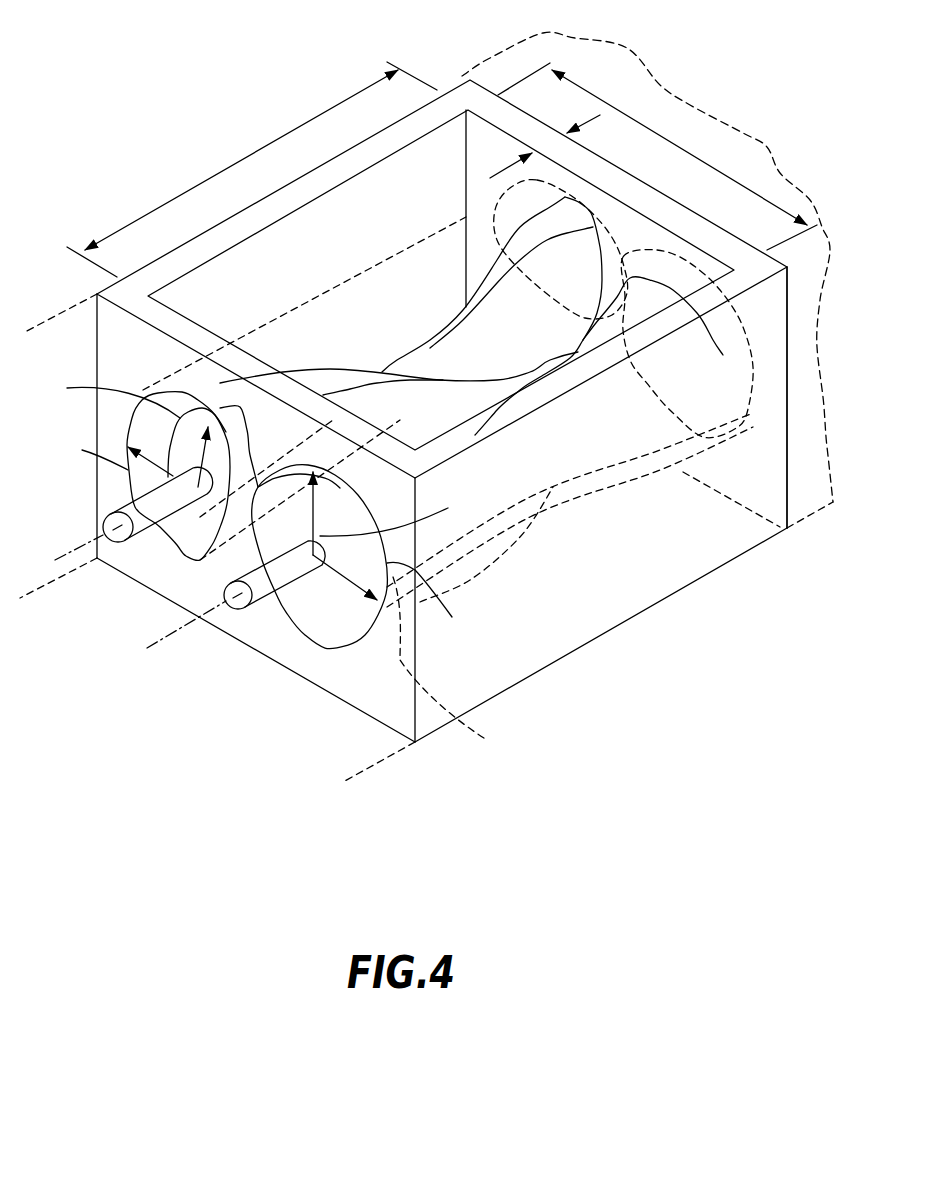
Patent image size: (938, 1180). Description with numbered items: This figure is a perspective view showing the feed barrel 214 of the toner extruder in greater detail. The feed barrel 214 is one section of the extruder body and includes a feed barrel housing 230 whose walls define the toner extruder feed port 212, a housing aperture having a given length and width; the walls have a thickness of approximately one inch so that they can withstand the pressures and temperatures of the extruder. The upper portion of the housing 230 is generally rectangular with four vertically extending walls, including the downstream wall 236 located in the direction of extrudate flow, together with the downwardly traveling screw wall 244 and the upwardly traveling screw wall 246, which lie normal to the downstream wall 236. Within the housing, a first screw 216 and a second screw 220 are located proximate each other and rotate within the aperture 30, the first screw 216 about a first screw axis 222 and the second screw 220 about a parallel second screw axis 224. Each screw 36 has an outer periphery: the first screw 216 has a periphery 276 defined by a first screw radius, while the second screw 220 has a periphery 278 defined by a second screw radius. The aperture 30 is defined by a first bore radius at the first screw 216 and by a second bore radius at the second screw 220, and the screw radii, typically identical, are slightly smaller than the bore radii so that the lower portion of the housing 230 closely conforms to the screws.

The toner extruder feed port 212 is at (455, 148).
The feed barrel 214 is at (212, 133).
The first screw 216 is at (335, 612).
The second screw 220 is at (153, 397).
The first screw axis 222 is at (180, 630).
The second screw axis 224 is at (73, 550).
The feed barrel housing 230 is at (515, 670).
The downstream wall 236 is at (677, 203).
The downwardly traveling screw wall 244 is at (237, 228).
The upwardly traveling screw wall 246 is at (753, 298).
The periphery 276 is at (570, 505).
The periphery 278 is at (242, 403).
The aperture 30 is at (317, 607).
The screw 36 is at (108, 550).